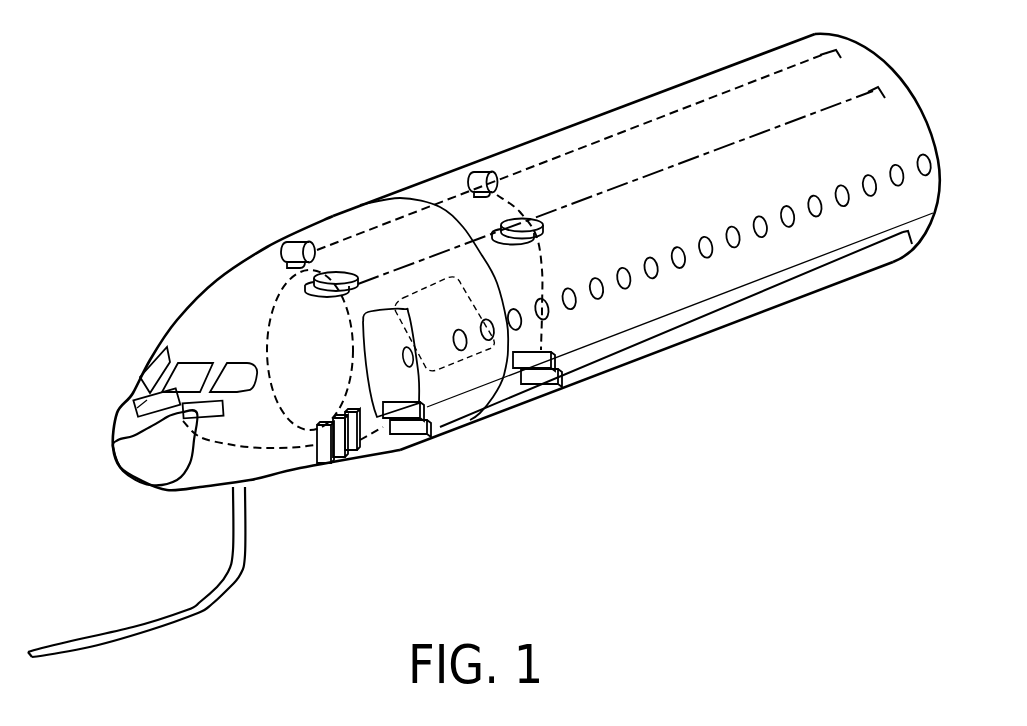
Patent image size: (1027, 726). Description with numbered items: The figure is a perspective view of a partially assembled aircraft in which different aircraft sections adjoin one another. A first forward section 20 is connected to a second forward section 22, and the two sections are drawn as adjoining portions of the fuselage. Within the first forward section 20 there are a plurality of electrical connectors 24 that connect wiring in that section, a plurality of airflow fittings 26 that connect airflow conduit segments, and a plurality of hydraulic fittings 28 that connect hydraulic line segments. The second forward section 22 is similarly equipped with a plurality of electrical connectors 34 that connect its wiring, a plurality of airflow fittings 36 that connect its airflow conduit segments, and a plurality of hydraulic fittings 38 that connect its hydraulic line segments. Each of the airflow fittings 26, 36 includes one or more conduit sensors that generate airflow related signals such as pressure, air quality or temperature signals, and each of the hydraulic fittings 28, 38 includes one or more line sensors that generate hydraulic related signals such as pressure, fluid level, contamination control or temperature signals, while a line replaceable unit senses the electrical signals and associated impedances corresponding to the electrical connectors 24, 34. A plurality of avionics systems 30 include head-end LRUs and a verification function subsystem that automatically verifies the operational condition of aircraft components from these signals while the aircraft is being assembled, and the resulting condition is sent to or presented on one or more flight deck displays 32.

The first forward section 20 is at (356, 210).
The second forward section 22 is at (660, 94).
The electrical connectors 24 is at (287, 240).
The airflow fittings 26 is at (298, 287).
The hydraulic fittings 28 is at (440, 428).
The avionics systems 30 is at (355, 456).
The flight deck displays 32 is at (113, 445).
The electrical connectors 34 is at (485, 168).
The airflow fittings 36 is at (490, 228).
The hydraulic fittings 38 is at (573, 380).